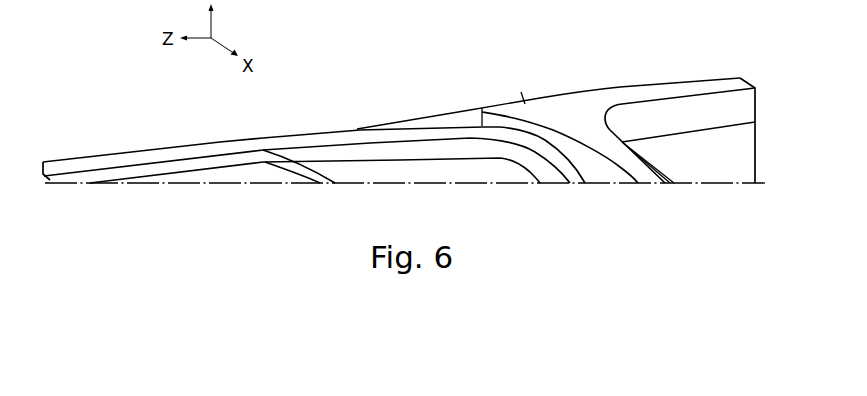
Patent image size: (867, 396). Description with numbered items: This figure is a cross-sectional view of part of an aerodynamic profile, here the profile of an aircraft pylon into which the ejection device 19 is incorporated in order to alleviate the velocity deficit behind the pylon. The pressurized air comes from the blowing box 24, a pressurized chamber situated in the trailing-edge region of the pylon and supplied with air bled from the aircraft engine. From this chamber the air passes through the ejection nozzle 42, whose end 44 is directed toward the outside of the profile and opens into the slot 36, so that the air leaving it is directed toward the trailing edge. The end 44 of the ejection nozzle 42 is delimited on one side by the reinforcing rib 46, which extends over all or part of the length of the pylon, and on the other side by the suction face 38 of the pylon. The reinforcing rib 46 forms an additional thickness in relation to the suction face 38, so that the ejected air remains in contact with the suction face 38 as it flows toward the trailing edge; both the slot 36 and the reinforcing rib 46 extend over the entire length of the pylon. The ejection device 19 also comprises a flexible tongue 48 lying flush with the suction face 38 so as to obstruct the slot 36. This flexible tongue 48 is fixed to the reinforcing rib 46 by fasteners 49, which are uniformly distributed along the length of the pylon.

The ejection device 19 is at (447, 89).
The blowing box 24 is at (757, 58).
The slot 36 is at (553, 132).
The suction face 38 is at (148, 155).
The ejection nozzle 42 is at (597, 168).
The end of the ejection nozzle 44 is at (481, 106).
The reinforcing rib 46 is at (603, 97).
The flexible tongue 48 is at (413, 118).
The fasteners 49 is at (522, 94).